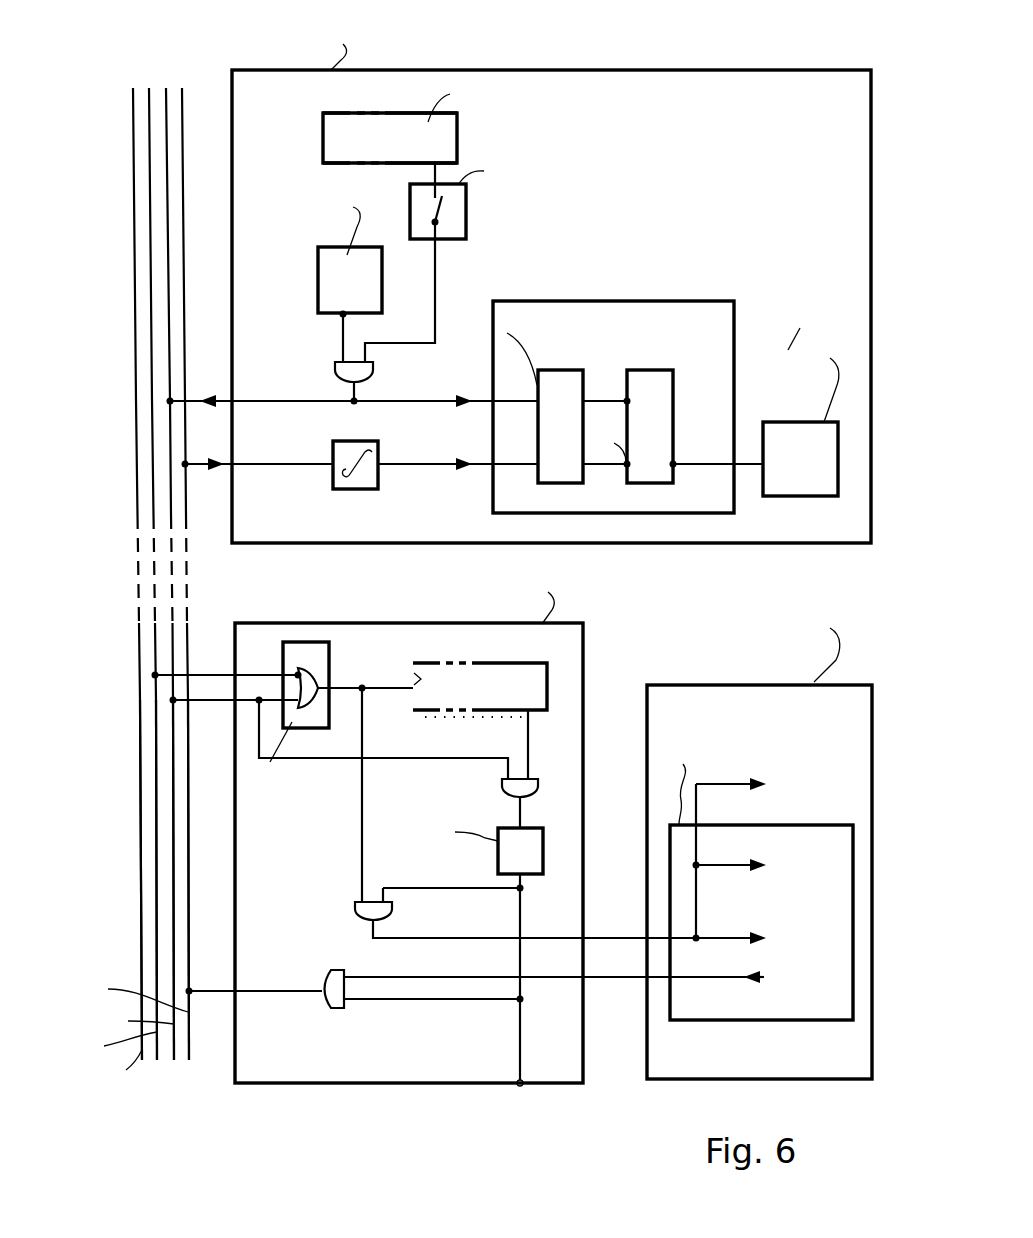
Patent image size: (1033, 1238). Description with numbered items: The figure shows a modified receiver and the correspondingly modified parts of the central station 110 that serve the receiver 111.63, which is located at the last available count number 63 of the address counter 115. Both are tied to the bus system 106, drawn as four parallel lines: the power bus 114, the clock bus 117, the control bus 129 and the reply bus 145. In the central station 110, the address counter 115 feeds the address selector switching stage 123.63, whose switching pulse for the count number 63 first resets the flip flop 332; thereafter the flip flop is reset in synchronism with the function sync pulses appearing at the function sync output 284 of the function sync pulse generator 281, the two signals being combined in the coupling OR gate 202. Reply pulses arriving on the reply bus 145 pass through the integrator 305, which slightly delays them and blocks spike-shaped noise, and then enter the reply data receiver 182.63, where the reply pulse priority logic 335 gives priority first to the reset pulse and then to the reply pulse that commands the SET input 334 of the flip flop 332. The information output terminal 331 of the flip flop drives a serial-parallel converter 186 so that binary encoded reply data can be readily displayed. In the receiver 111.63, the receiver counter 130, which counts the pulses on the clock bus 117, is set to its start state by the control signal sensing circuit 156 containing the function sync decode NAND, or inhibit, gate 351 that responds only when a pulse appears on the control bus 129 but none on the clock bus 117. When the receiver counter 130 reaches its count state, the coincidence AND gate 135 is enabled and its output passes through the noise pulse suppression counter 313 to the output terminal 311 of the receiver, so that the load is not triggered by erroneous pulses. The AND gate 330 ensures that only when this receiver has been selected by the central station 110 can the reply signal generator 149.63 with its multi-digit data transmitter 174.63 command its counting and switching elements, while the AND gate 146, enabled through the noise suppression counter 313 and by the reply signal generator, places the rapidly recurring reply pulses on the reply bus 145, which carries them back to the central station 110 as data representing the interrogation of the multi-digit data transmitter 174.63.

The bus system 106 is at (192, 81).
The power bus 114 is at (142, 1052).
The clock bus 117 is at (157, 1050).
The control bus 129 is at (174, 1053).
The reply bus 145 is at (189, 1040).
The central station 110 is at (268, 522).
The last count number 63 is at (473, 122).
The address counter 115 is at (352, 126).
The address selector switching stage 123.63 is at (466, 215).
The function sync pulse generator 281 is at (330, 268).
The function sync output 284 is at (342, 318).
The OR gate 202 is at (375, 374).
The integrator 305 is at (333, 478).
The reply data receiver 182.63 is at (584, 305).
The reply pulse priority logic 335 is at (560, 385).
The flip flop circuit 332 is at (653, 385).
The SET input 334 is at (627, 464).
The information output terminal 331 is at (673, 466).
The serial-parallel converter 186 is at (801, 421).
The receiver 111.63 is at (418, 638).
The control signal sensing circuit 156 is at (294, 709).
The function sync decode NAND gate 351 is at (308, 705).
The receiver counter 130 is at (494, 672).
The AND gate 135 is at (510, 780).
The noise pulse suppression counter 313 is at (498, 856).
The output terminal 311 is at (522, 1087).
The AND gate 330 is at (356, 911).
The AND gate 146 is at (335, 1009).
The reply signal generator 149.63 is at (778, 663).
The multi-digit data transmitter 174.63 is at (740, 1002).